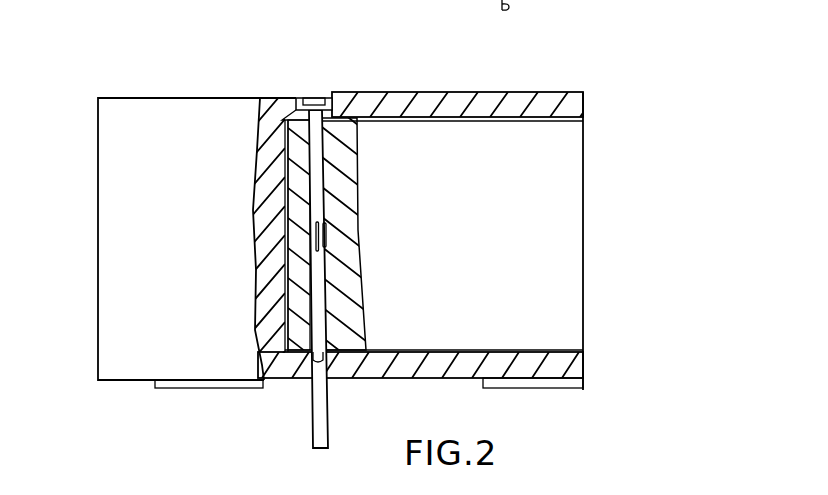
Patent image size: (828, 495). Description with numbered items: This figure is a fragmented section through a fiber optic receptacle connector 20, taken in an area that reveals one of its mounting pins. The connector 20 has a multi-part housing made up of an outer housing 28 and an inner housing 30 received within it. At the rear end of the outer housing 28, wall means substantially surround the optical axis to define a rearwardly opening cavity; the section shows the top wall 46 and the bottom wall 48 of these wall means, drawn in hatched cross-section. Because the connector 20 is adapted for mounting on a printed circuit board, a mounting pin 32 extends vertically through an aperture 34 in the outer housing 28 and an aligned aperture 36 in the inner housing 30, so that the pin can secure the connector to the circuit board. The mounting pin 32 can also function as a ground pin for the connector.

The fiber optic connector 20 is at (597, 68).
The outer housing 28 is at (82, 166).
The inner housing 30 is at (597, 202).
The mounting pin 32 is at (318, 405).
The aperture in the outer housing 34 is at (318, 99).
The aperture in the inner housing 36 is at (320, 267).
The top wall 46 is at (418, 103).
The bottom wall 48 is at (438, 380).